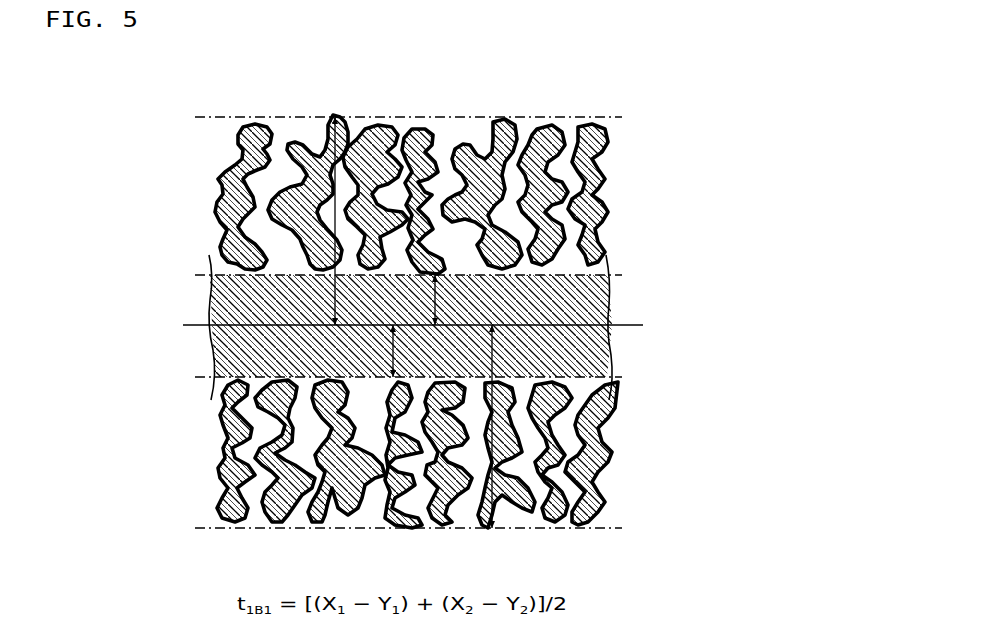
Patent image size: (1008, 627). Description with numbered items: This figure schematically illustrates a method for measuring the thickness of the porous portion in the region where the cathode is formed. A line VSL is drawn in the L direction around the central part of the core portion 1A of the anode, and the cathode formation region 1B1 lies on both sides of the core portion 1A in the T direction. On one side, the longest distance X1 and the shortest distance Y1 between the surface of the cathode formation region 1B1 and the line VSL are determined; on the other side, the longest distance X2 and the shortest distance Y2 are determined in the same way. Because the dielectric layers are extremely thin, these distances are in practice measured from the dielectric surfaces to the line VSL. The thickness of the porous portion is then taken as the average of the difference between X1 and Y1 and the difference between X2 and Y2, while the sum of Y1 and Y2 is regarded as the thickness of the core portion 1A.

The core portion 1A is at (230, 304).
The cathode formation region 1B1 is at (613, 98).
The line VSL is at (232, 327).
The longest distance X1 is at (343, 221).
The shortest distance Y1 is at (443, 300).
The longest distance X2 is at (499, 426).
The shortest distance Y2 is at (401, 351).